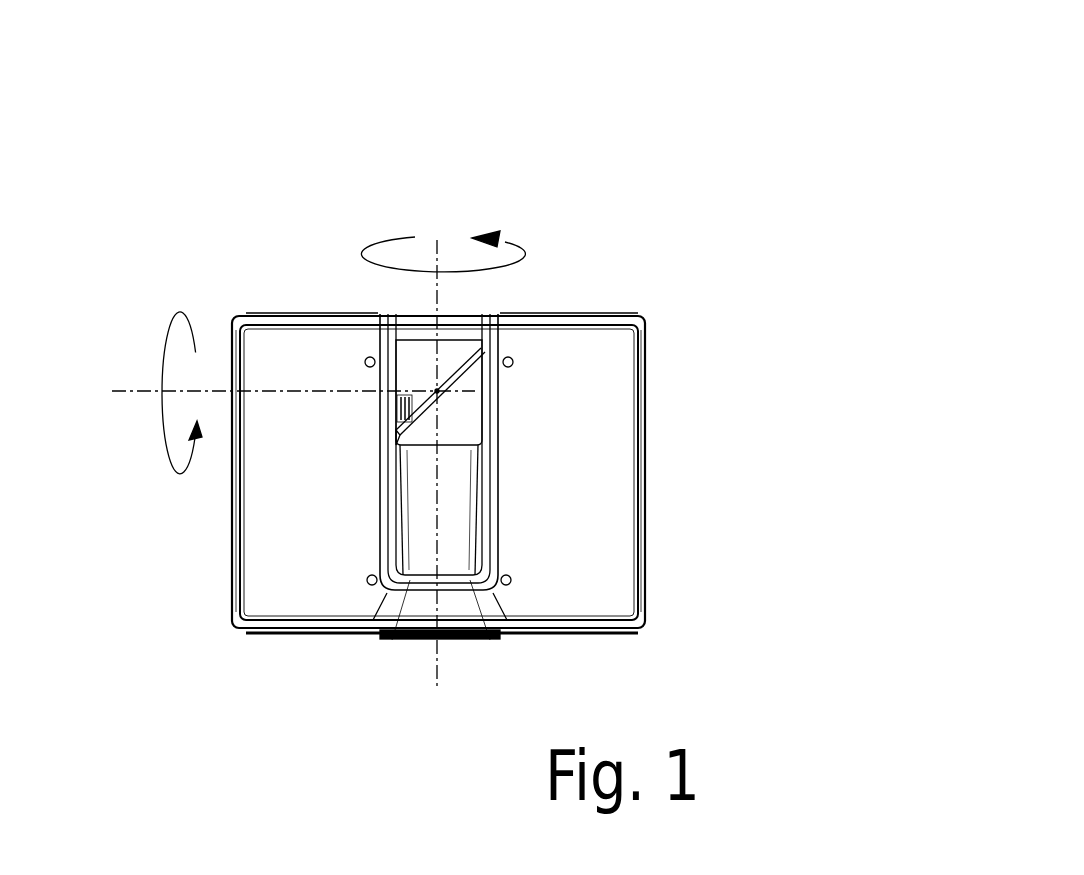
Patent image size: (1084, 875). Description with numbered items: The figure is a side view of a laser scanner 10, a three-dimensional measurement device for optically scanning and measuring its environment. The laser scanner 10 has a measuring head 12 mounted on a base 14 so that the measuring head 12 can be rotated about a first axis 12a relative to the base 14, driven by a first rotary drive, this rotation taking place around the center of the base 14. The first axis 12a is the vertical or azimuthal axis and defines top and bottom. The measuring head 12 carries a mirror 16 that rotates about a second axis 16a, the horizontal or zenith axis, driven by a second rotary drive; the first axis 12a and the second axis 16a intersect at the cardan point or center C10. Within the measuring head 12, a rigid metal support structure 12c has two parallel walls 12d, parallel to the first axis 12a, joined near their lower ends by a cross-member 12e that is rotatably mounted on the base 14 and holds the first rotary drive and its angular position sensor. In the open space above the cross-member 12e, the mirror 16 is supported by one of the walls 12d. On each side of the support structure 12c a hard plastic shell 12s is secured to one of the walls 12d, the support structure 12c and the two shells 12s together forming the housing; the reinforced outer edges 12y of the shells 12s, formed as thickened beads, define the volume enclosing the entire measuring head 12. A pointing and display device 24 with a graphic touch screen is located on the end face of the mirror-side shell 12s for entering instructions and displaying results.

The laser scanner 10 is at (676, 197).
The measuring head 12 is at (232, 530).
The first axis 12a is at (438, 297).
The support structure 12c is at (505, 540).
The walls 12d is at (376, 468).
The cross-member 12e is at (492, 640).
The shell 12s is at (252, 577).
The outer edges 12y is at (232, 483).
The base 14 is at (421, 638).
The mirror 16 is at (478, 352).
The second axis 16a is at (130, 390).
The pointing and display device 24 is at (228, 352).
The center C10 is at (437, 398).